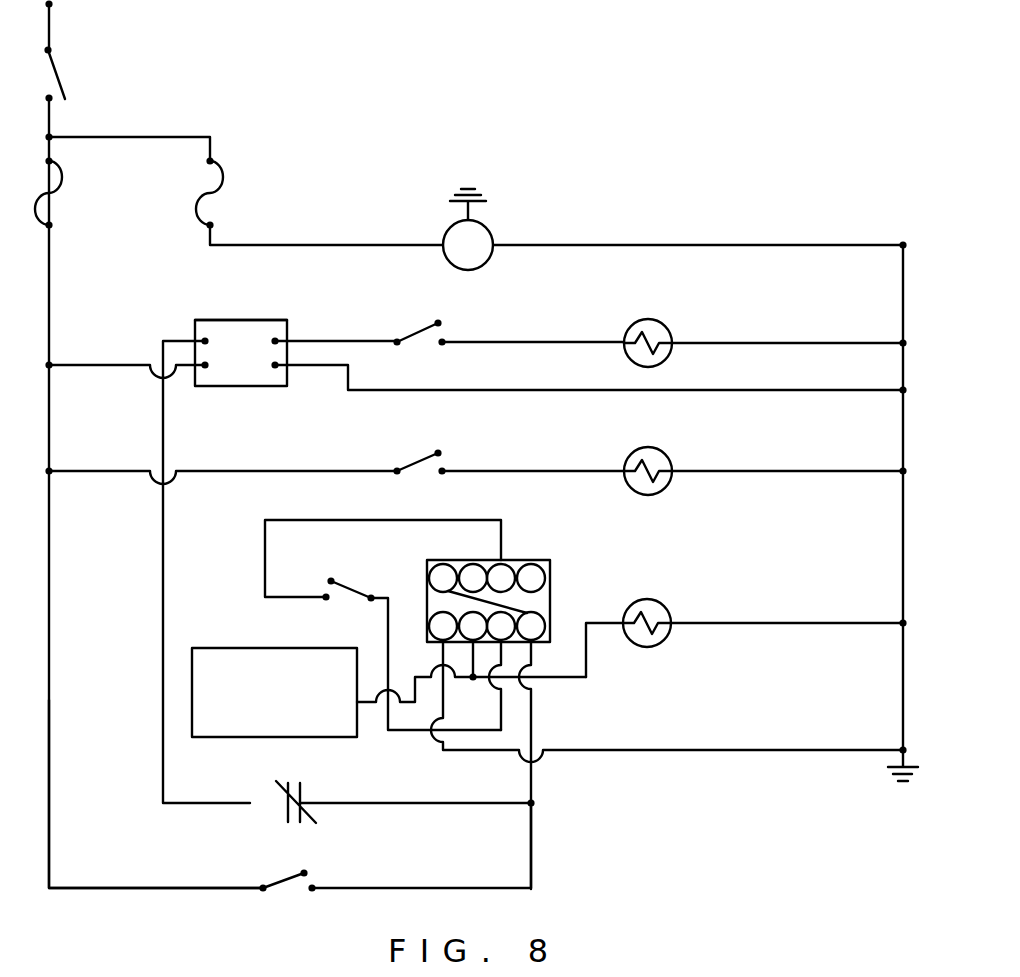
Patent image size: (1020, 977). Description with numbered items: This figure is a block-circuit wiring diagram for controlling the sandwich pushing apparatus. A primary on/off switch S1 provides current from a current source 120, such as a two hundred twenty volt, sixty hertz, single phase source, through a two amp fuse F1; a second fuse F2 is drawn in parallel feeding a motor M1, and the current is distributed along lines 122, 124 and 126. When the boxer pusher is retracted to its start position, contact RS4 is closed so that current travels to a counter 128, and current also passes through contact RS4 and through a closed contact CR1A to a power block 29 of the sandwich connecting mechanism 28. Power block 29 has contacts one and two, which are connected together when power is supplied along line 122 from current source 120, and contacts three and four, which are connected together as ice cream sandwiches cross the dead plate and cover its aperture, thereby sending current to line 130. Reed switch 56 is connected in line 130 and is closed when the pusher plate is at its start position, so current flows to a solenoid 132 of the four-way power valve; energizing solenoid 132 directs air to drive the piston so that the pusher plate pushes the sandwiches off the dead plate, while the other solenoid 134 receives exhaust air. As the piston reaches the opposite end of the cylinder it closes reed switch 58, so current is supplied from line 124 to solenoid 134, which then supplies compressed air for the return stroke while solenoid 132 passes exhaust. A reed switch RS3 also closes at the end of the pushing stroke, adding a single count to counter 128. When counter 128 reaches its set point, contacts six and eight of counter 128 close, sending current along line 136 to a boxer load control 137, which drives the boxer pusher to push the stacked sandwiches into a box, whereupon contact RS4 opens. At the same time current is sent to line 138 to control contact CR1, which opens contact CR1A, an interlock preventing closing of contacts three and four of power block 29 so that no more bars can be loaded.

The current source 120 is at (52, 5).
The primary on/off switch S1 is at (60, 74).
The fuse F1 is at (61, 182).
The fuse F2 is at (222, 182).
The motor M1 is at (673, 242).
The sandwich connecting mechanism 28 is at (269, 318).
The power block 29 is at (208, 318).
The line 122 is at (87, 362).
The line 124 is at (115, 468).
The line 130 is at (337, 340).
The reed switch 56 is at (443, 332).
The reed switch 58 is at (444, 462).
The solenoid 132 is at (668, 326).
The solenoid 134 is at (662, 451).
The counter 128 is at (518, 560).
The reed switch RS3 is at (348, 575).
The boxer load control 137 is at (205, 647).
The line 136 is at (424, 674).
The line 138 is at (565, 679).
The control contact CR1 is at (658, 603).
The contact CR1A is at (402, 789).
The line 126 is at (88, 886).
The contact RS4 is at (395, 847).